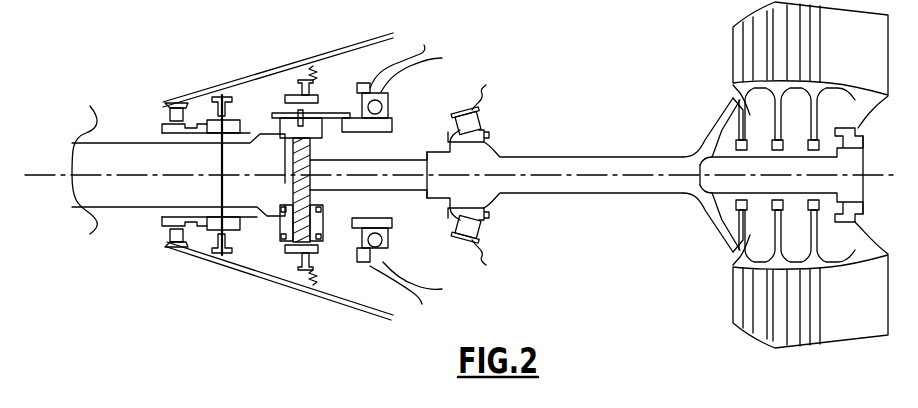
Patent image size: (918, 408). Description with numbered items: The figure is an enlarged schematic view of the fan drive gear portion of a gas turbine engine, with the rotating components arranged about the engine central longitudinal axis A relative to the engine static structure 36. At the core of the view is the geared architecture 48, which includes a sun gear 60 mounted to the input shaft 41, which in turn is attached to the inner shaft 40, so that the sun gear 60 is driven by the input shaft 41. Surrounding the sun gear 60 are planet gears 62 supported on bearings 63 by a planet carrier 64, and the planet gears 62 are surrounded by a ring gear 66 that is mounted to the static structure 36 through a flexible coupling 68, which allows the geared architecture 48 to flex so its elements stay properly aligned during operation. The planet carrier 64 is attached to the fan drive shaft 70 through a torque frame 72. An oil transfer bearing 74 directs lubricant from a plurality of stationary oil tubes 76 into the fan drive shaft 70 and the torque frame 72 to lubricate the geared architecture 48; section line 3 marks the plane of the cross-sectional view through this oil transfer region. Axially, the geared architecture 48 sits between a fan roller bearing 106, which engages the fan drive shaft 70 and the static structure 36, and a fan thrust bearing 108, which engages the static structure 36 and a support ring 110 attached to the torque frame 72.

The engine central longitudinal axis A is at (48, 175).
The engine static structure 36 is at (289, 62).
The inner shaft 40 is at (540, 193).
The input shaft 41 is at (394, 160).
The geared architecture 48 is at (252, 157).
The sun gear 60 is at (311, 152).
The planet gears 62 is at (317, 207).
The bearings 63 is at (320, 247).
The planet carrier 64 is at (282, 184).
The ring gear 66 is at (318, 100).
The flexible coupling 68 is at (314, 67).
The fan drive shaft 70 is at (130, 143).
The torque frame 72 is at (277, 113).
The oil transfer bearing 74 is at (202, 103).
The stationary oil tubes 76 is at (215, 242).
The fan roller bearing 106 is at (165, 242).
The fan thrust bearing 108 is at (385, 107).
The support ring 110 is at (385, 200).
The section line 3- 3 is at (230, 98).